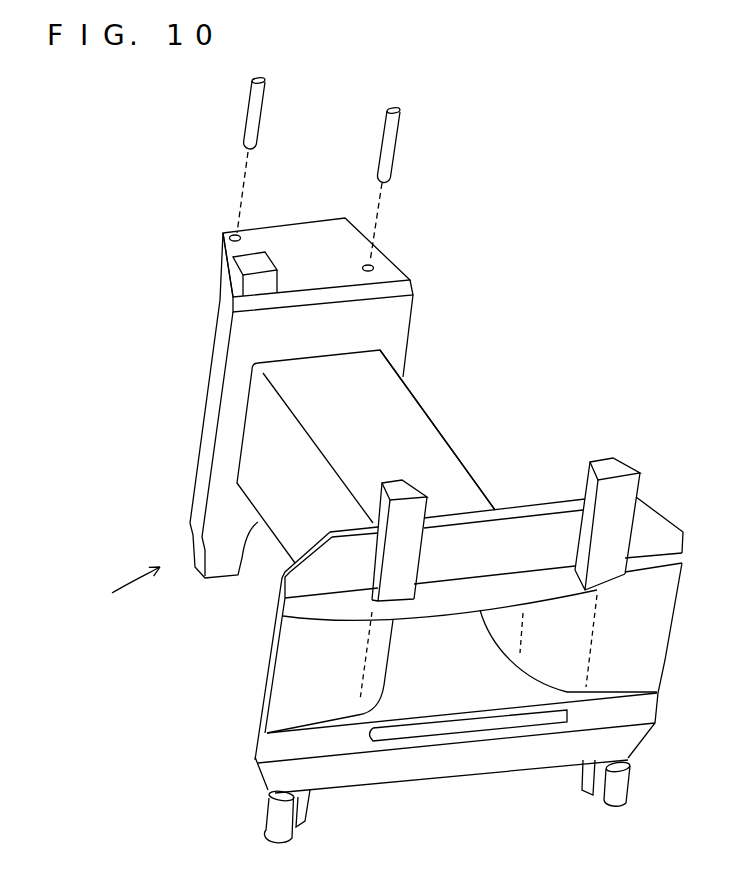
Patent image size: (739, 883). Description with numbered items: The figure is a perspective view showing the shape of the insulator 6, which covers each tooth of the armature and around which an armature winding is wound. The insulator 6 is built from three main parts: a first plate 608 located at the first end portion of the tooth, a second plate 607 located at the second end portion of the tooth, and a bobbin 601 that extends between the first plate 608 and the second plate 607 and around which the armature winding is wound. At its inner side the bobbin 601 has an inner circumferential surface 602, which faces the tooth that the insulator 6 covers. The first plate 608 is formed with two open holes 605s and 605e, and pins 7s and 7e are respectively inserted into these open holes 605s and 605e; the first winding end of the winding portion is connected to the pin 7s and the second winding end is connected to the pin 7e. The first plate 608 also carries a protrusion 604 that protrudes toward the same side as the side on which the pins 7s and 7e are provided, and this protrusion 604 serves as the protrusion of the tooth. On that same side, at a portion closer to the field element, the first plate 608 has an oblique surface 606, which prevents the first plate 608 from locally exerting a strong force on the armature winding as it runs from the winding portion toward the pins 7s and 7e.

The insulator 6 is at (127, 587).
The pin 7e is at (247, 113).
The pin 7s is at (396, 137).
The bobbin 601 is at (447, 460).
The inner circumferential surface 602 is at (452, 697).
The protrusion 604 is at (229, 268).
The open hole 605e is at (231, 237).
The open hole 605s is at (374, 267).
The oblique surface 606 is at (387, 288).
The second plate 607 is at (530, 513).
The first plate 608 is at (393, 340).